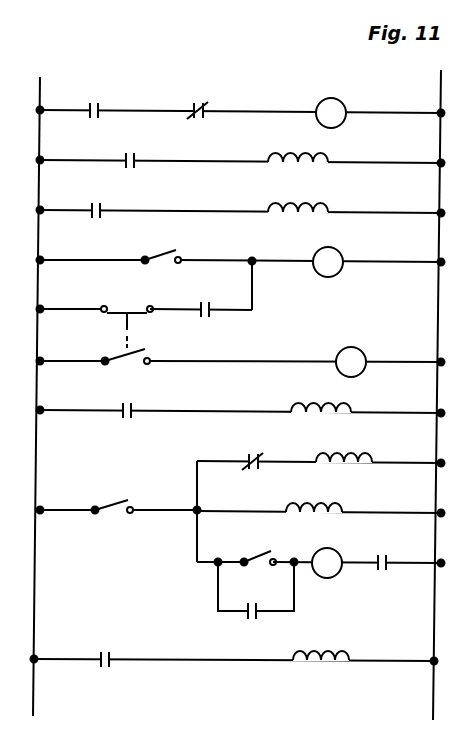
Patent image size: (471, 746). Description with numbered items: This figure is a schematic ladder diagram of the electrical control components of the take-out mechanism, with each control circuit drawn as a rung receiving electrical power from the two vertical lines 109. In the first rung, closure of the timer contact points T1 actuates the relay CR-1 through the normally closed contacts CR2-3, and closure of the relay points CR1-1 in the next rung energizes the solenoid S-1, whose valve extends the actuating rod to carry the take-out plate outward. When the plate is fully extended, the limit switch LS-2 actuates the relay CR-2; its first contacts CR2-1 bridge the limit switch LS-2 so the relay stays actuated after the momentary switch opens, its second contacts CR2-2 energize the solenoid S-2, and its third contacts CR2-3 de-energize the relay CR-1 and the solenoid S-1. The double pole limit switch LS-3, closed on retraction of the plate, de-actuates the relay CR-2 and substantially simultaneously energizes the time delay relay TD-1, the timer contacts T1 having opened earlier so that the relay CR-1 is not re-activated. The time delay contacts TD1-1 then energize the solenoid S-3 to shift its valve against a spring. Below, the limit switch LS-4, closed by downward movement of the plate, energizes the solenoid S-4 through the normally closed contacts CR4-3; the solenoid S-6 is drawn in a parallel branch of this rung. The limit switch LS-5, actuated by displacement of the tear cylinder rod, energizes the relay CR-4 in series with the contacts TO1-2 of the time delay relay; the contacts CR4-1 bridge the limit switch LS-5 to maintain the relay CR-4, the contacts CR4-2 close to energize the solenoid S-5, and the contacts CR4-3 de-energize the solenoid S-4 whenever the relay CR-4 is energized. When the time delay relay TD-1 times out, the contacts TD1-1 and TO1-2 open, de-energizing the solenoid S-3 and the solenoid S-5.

The lines 109 is at (40, 93).
The timer contact points T1 is at (90, 100).
The third set of contacts of relay CR2 CR2-3 is at (197, 100).
The relay CR-1 is at (350, 107).
The relay points CR1-1 is at (138, 149).
The solenoid S-1 is at (316, 149).
The second set of contacts of relay CR2 CR2-2 is at (122, 199).
The solenoid S-2 is at (314, 199).
The limit switch LS-2 is at (163, 247).
The relay CR-2 is at (351, 256).
The first set of contacts of relay CR2 CR2-1 is at (207, 298).
The limit switch LS-3 is at (113, 347).
The time delay relay TD-1 is at (371, 356).
The time delay contacts TD1-1 is at (155, 398).
The solenoid S-3 is at (335, 399).
The third pair of contacts of relay CR4 CR4-3 is at (251, 451).
The solenoid S-4 is at (351, 447).
The solenoid S-6 is at (330, 499).
The limit switch LS-4 is at (113, 498).
The limit switch LS-5 is at (249, 549).
The relay CR-4 is at (342, 557).
The time delay contacts TO1-2 is at (373, 578).
The first pair of contacts of relay CR4 CR4-1 is at (277, 622).
The second pair of contacts of relay CR4 CR4-2 is at (107, 647).
The solenoid S-5 is at (336, 647).